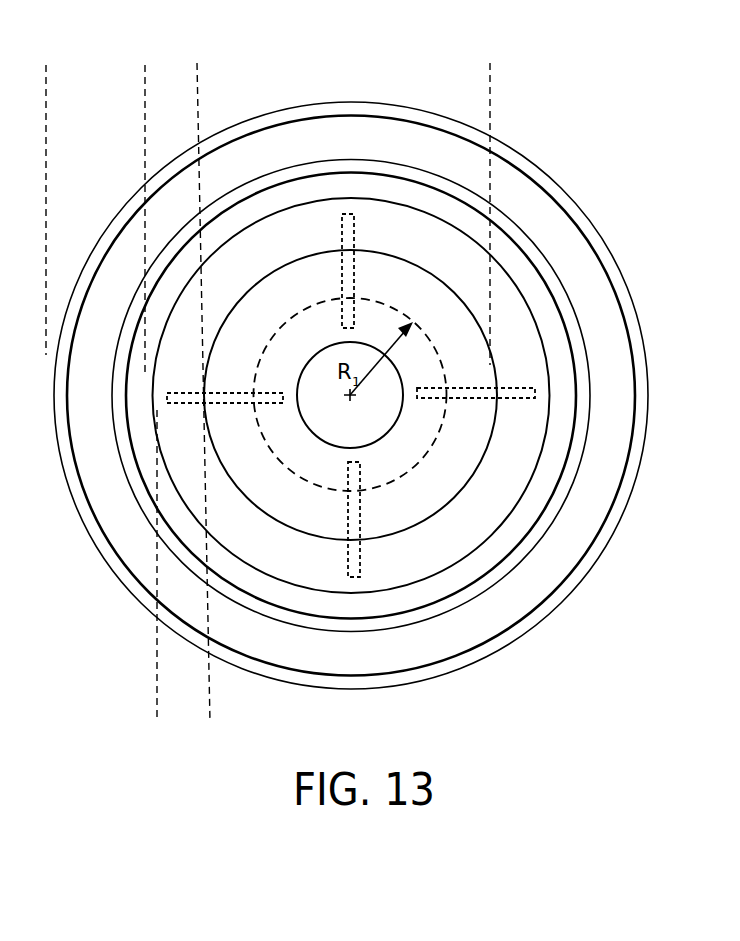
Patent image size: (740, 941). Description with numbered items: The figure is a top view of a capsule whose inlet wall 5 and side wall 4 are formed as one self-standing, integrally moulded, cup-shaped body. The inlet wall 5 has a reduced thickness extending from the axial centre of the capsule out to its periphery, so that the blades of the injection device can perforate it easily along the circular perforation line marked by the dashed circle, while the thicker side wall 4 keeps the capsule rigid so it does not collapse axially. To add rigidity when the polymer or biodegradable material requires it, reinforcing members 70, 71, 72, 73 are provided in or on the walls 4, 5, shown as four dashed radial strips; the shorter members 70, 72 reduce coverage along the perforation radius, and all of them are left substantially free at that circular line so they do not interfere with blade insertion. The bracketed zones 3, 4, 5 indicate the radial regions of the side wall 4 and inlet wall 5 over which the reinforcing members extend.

The outer zone 3 is at (145, 65).
The side wall 4 is at (157, 722).
The inlet wall 5 is at (490, 63).
The reinforcing member 70 is at (360, 557).
The reinforcing member 71 is at (507, 398).
The reinforcing member 72 is at (354, 237).
The reinforcing member 73 is at (178, 403).